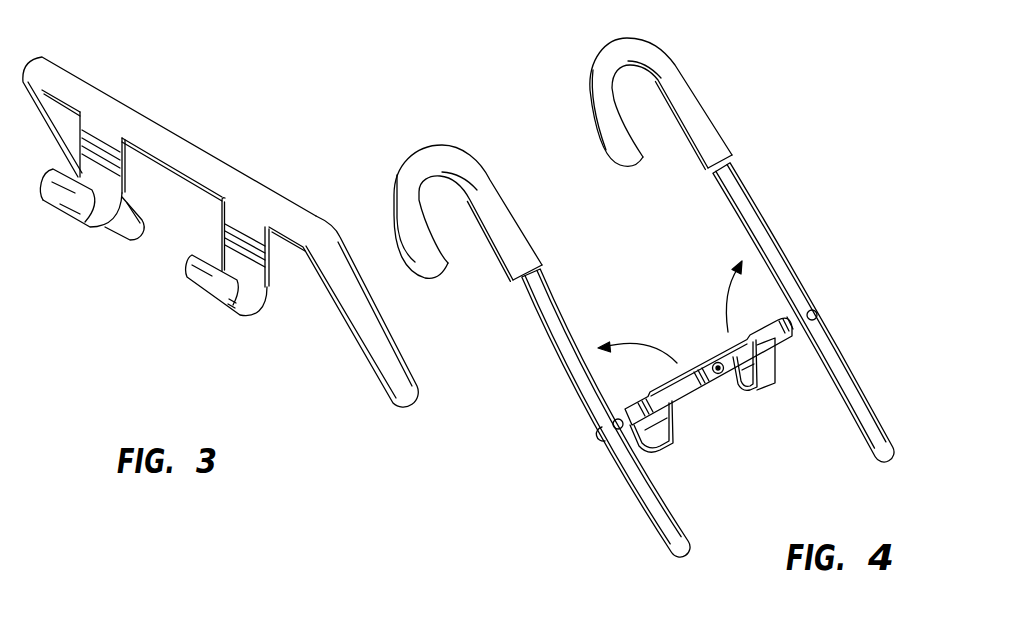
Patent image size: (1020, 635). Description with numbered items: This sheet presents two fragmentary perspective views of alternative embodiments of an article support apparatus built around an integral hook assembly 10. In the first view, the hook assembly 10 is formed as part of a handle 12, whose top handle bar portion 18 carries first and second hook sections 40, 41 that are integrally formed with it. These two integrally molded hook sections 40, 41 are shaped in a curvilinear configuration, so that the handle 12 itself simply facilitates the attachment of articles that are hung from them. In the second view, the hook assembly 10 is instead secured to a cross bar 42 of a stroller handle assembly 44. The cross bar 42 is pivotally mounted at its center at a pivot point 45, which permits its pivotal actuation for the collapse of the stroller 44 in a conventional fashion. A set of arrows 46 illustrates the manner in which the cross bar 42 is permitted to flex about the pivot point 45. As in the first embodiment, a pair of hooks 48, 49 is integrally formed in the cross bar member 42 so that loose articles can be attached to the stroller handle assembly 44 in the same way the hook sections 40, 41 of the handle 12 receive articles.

In FIG. 3, the hook assembly 10 is at (156, 108).
In FIG. 4, the hook assembly 10 is at (703, 335).
In FIG. 3, the handle 12 is at (330, 247).
In FIG. 3, the top handle bar portion 18 is at (220, 162).
In FIG. 3, the first hook section 40 is at (77, 207).
In FIG. 3, the second hook section 41 is at (200, 287).
In FIG. 4, the cross bar 42 is at (688, 387).
In FIG. 4, the stroller handle assembly 44 is at (752, 205).
In FIG. 4, the pivot point 45 is at (720, 374).
In FIG. 4, the arrows 46 is at (641, 348).
In FIG. 4, the hook 48 is at (661, 438).
In FIG. 4, the hook 49 is at (770, 374).